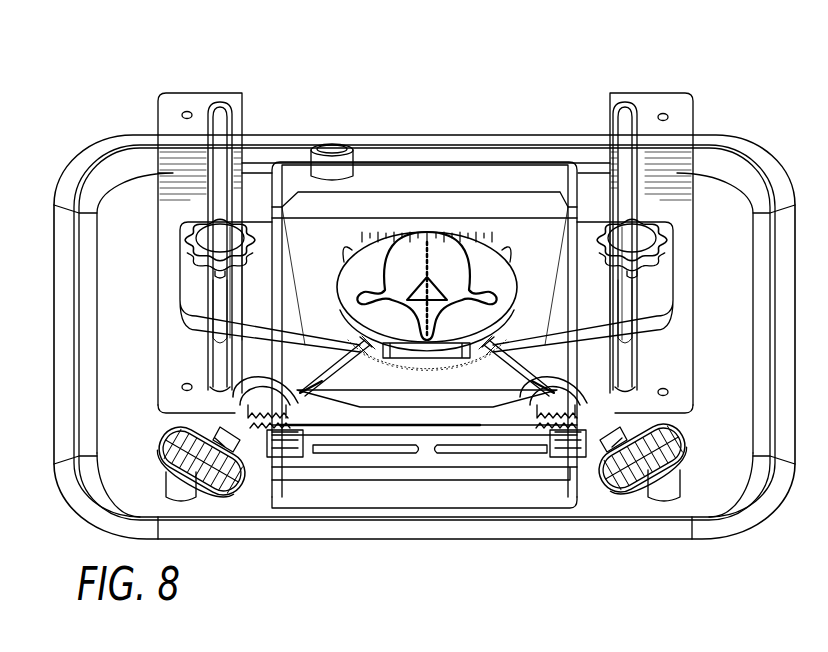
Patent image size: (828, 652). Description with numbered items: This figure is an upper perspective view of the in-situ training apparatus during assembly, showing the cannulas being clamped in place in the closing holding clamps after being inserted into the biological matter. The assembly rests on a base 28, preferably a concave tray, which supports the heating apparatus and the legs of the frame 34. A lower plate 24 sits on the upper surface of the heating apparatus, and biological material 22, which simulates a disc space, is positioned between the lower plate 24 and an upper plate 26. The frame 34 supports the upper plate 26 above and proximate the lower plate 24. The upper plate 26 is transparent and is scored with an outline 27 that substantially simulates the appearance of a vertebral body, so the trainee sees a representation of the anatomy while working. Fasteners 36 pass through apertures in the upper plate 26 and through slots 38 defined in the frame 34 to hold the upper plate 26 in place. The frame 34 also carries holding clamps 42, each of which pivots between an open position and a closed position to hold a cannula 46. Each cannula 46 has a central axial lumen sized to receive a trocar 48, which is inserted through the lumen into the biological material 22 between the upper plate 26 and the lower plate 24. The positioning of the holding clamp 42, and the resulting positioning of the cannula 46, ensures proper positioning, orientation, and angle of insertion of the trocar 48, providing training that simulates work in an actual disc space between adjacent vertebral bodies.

The biological material 22 is at (428, 377).
The lower plate 24 is at (463, 392).
The upper plate 26 is at (590, 250).
The outline 27 is at (467, 265).
The base 28 is at (85, 350).
The frame 34 is at (173, 130).
The fasteners 36 is at (653, 240).
The slots 38 is at (222, 104).
The holding clamp 42 is at (268, 393).
The cannula 46 is at (292, 270).
The trocar 48 is at (240, 492).